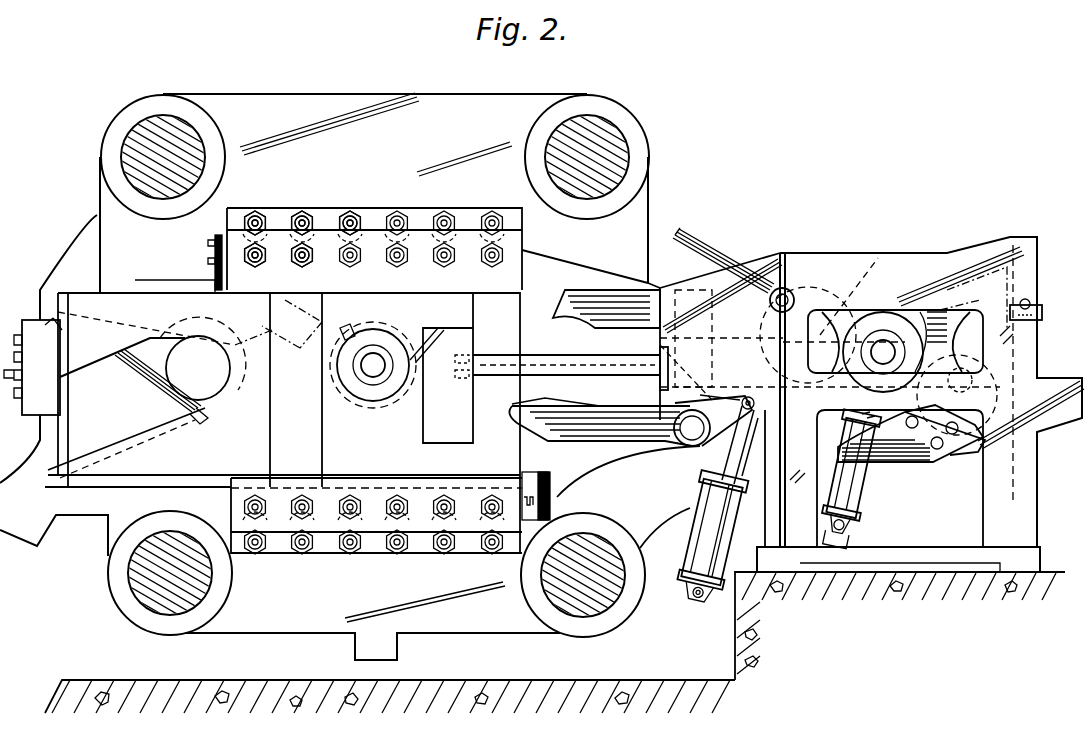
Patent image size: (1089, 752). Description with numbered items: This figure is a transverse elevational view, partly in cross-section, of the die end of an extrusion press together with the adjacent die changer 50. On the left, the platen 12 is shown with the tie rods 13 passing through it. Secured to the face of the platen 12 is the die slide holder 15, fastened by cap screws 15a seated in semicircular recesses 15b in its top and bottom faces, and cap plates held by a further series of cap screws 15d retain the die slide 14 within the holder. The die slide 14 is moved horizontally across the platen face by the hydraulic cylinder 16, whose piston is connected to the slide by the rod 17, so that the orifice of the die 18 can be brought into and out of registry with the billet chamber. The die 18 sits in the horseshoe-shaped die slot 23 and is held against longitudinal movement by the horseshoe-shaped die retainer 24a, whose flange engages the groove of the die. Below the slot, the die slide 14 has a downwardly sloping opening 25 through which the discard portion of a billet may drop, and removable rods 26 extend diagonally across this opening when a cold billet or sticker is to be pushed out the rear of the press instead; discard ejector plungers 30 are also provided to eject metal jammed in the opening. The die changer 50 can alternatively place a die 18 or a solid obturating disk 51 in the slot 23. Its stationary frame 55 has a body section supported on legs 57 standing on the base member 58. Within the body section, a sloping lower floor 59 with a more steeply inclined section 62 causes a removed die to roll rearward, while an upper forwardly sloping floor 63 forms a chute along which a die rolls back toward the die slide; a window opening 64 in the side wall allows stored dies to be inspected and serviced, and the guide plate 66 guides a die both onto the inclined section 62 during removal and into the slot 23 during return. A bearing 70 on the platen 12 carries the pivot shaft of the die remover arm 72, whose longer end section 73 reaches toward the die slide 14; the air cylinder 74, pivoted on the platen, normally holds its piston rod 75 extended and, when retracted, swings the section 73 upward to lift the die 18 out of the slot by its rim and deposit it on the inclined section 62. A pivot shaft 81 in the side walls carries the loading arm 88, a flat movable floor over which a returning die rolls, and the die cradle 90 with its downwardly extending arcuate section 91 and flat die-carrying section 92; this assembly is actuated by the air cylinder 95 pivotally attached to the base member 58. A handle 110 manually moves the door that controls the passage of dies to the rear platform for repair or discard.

The platen 12 is at (413, 98).
The tie rods 13 is at (130, 135).
The die slide 14 is at (90, 303).
The die slide holder 15 is at (505, 243).
The cap screws 15a is at (350, 218).
The semicircular recesses 15b is at (286, 236).
The cap screws 15d is at (296, 262).
The hydraulic cylinder 16 is at (957, 395).
The rod 17 is at (562, 365).
The die 18 is at (370, 400).
The die slot 23 is at (420, 338).
The die retainer 24a is at (343, 328).
The downwardly sloping opening 25 is at (118, 437).
The rods 26 is at (145, 380).
The discard ejector plungers 30 is at (296, 390).
The die changer 50 is at (922, 242).
The obturating disk 51 is at (832, 323).
The stationary frame 55 is at (1036, 229).
The legs 57 is at (1013, 497).
The base member 58 is at (922, 547).
The sloping lower floor 59 is at (874, 475).
The inclined section 62 is at (714, 416).
The upper fixed floor 63 is at (880, 245).
The window opening 64 is at (925, 320).
The guide plate 66 is at (590, 292).
The bearing 70 is at (692, 447).
The die remover arm 72 is at (617, 413).
The longer end section 73 is at (533, 412).
The air cylinder 74 is at (700, 540).
The piston rod 75 is at (732, 460).
The pivot shaft 81 is at (793, 295).
The loading arm 88 is at (712, 258).
The die cradle 90 is at (898, 474).
The arcuate section 91 is at (866, 430).
The die-carrying section 92 is at (975, 280).
The air cylinder 95 is at (866, 490).
The handle 110 is at (1035, 314).